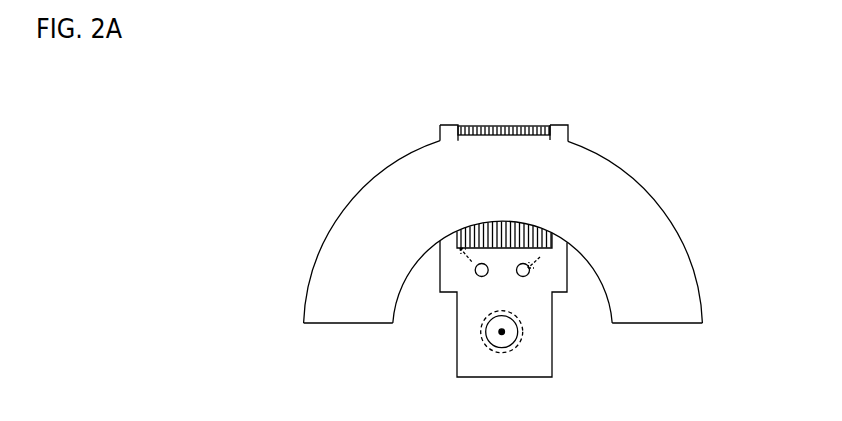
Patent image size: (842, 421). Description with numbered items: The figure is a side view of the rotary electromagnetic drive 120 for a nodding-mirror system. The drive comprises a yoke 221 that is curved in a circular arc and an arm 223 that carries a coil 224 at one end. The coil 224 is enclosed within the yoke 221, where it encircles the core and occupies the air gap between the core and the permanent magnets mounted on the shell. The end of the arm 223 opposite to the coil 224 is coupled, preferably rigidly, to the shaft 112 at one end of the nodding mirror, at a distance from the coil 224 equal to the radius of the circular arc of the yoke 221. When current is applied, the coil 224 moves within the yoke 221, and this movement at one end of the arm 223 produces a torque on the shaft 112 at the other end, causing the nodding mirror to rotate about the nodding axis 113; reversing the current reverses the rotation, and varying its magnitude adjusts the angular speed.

The rotary electromagnetic drive 120 is at (223, 107).
The yoke 221 is at (667, 215).
The arm 223 is at (552, 362).
The coil 224 is at (528, 127).
The shaft 112 is at (503, 332).
The nodding axis 113 is at (501, 332).